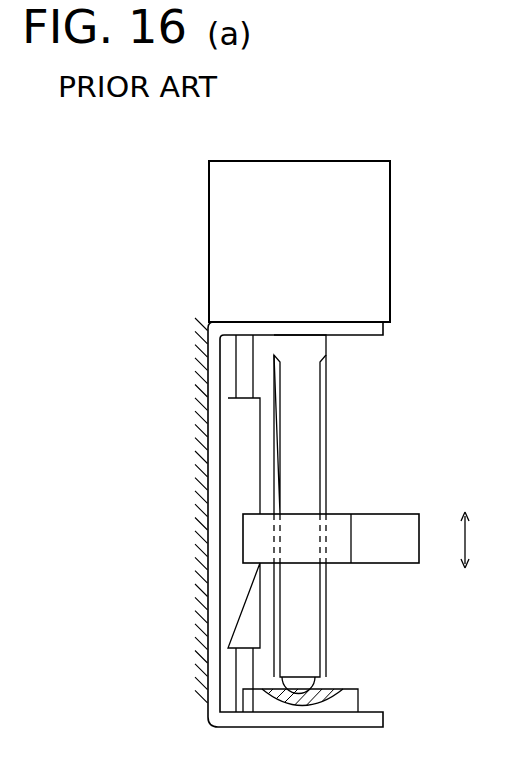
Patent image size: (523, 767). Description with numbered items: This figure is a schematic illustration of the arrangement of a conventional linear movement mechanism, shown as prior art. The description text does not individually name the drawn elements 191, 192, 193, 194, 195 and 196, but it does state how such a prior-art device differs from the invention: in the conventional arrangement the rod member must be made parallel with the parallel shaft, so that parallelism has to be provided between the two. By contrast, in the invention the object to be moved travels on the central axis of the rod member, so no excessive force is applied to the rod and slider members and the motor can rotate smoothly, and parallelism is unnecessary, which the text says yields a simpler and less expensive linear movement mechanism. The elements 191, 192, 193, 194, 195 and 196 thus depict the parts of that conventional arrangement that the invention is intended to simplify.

The head unit / upper body 191 is at (376, 272).
The bracket 192 is at (198, 343).
The guide rod 193 is at (240, 360).
The slide block 194 is at (242, 463).
The shaft / plunger 195 is at (303, 467).
The seat / pedestal 196 is at (352, 700).